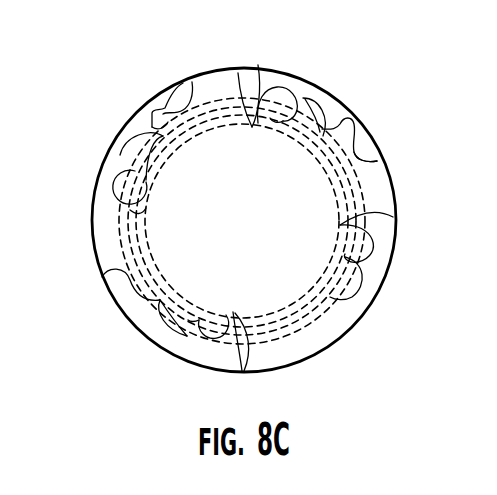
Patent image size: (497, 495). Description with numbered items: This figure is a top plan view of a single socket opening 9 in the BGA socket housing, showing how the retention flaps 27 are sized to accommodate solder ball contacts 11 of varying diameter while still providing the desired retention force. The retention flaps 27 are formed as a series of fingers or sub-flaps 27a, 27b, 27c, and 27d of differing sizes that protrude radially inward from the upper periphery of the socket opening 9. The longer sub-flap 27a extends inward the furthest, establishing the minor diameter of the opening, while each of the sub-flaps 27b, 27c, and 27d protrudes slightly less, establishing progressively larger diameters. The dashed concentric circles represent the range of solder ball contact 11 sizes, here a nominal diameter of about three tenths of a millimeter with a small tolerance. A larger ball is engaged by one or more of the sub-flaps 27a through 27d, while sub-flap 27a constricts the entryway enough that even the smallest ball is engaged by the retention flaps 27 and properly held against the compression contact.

The socket opening 9 is at (395, 255).
The solder ball contact 11 is at (255, 233).
The retention flap 27 is at (318, 125).
The sub-flap 27a is at (258, 65).
The sub-flap 27b is at (295, 100).
The sub-flap 27c is at (332, 128).
The sub-flap 27d is at (358, 158).